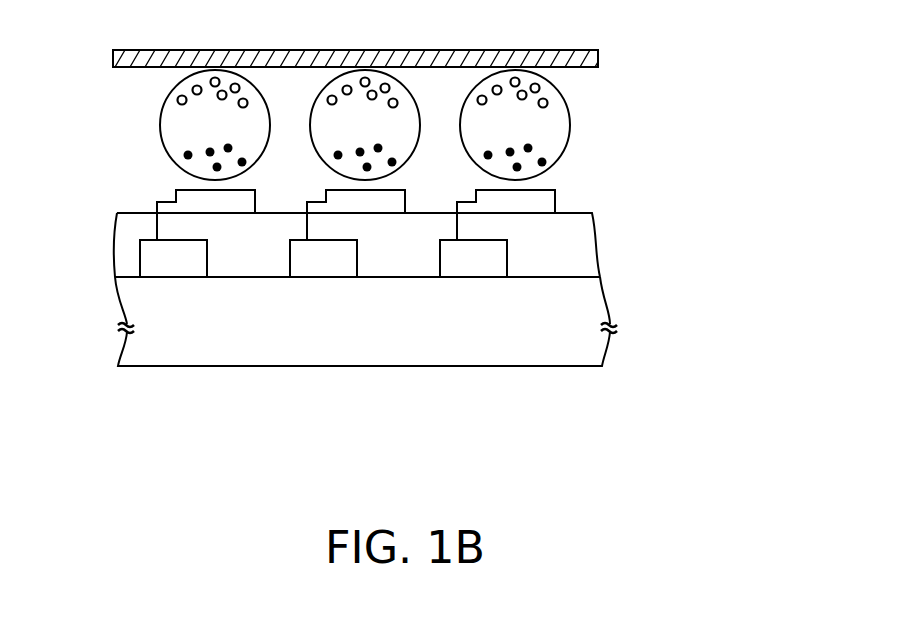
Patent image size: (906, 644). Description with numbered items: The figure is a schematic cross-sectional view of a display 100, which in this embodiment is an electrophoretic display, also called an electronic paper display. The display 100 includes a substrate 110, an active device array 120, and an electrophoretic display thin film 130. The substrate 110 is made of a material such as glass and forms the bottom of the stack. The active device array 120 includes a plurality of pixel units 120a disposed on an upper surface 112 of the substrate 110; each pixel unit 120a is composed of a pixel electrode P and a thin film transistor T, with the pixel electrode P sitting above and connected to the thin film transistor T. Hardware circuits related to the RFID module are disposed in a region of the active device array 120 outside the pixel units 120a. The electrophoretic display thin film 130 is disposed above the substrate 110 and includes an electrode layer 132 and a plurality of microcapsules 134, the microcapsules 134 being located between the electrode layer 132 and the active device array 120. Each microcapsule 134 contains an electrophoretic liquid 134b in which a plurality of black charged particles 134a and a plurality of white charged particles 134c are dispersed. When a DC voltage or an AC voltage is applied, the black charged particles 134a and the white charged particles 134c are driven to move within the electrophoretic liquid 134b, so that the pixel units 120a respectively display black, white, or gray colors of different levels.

The display 100 is at (745, 487).
The substrate 110 is at (592, 352).
The upper surface 112 is at (129, 268).
The active device array 120 is at (613, 190).
The pixel unit 120a is at (552, 430).
The thin film transistor T is at (465, 267).
The pixel electrode P is at (533, 207).
The electrophoretic display thin film 130 is at (732, 40).
The electrode layer 132 is at (598, 59).
The microcapsule 134 is at (672, 83).
The black charged particles 134a is at (547, 162).
The electrophoretic liquid 134b is at (558, 125).
The white charged particles 134c is at (548, 104).